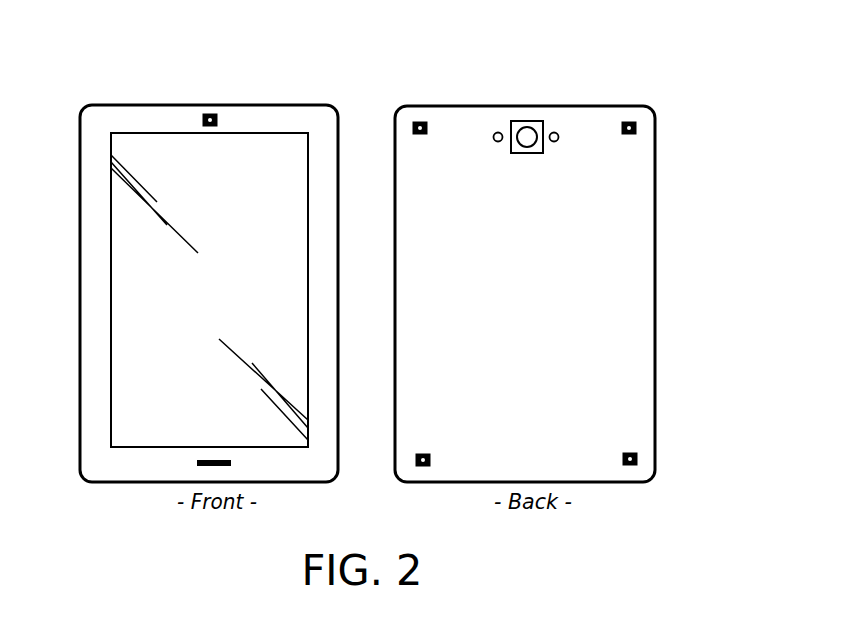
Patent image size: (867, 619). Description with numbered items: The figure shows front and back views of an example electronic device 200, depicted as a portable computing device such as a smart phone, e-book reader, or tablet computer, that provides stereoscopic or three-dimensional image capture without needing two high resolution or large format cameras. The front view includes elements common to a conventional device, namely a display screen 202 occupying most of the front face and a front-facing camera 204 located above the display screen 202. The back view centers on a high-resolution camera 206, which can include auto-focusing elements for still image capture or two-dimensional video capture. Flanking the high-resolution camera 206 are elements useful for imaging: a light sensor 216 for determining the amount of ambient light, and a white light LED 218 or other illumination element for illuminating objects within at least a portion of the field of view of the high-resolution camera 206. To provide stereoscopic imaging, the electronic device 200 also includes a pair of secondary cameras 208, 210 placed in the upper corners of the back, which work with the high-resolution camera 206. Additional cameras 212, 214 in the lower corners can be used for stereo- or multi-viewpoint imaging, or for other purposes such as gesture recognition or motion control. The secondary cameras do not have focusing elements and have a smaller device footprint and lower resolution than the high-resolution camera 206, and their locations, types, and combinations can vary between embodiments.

The electronic device 200 is at (754, 117).
The display screen 202 is at (111, 141).
The front-facing camera 204 is at (207, 112).
The high-resolution camera 206 is at (523, 153).
The secondary camera 208 is at (420, 121).
The secondary camera 210 is at (634, 133).
The additional camera 212 is at (430, 458).
The additional camera 214 is at (637, 458).
The light sensor 216 is at (498, 132).
The white light LED 218 is at (554, 132).